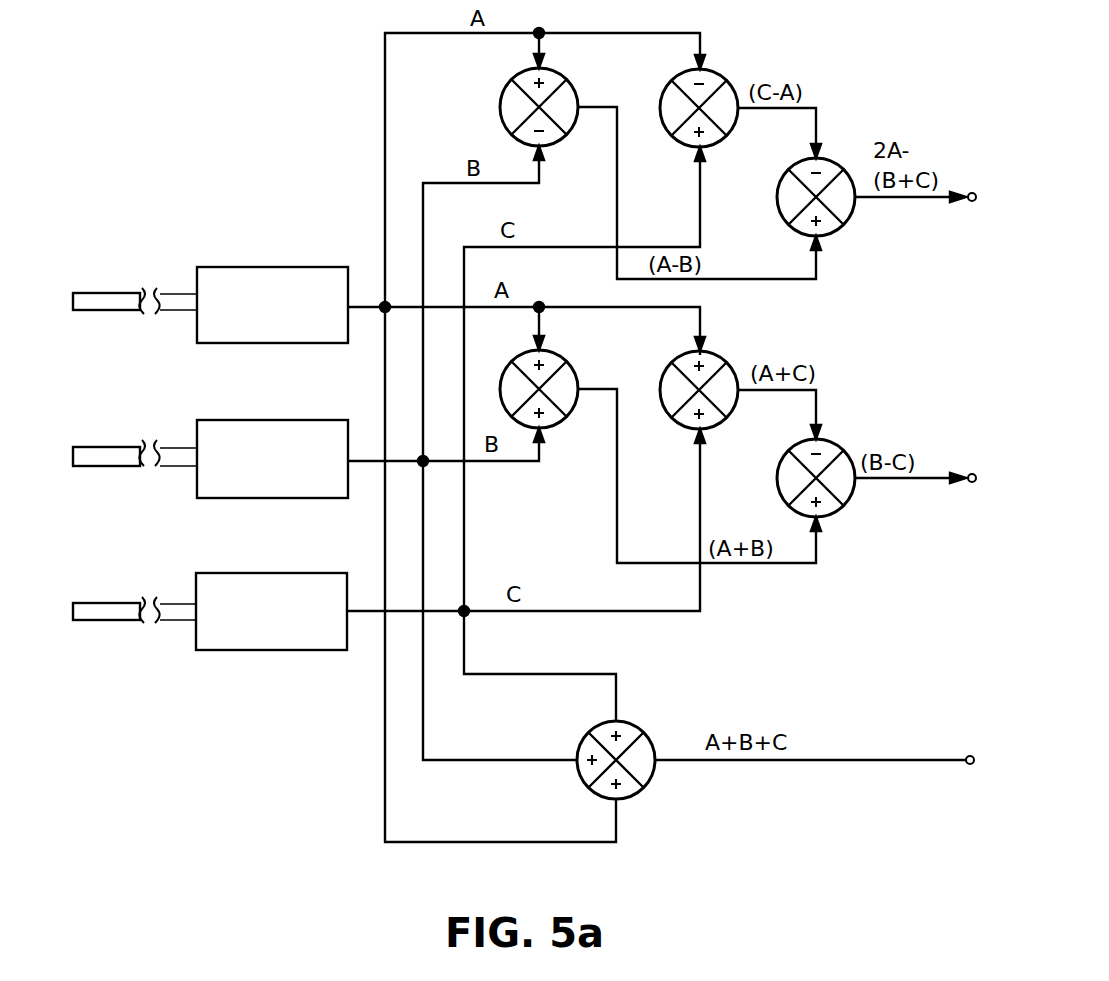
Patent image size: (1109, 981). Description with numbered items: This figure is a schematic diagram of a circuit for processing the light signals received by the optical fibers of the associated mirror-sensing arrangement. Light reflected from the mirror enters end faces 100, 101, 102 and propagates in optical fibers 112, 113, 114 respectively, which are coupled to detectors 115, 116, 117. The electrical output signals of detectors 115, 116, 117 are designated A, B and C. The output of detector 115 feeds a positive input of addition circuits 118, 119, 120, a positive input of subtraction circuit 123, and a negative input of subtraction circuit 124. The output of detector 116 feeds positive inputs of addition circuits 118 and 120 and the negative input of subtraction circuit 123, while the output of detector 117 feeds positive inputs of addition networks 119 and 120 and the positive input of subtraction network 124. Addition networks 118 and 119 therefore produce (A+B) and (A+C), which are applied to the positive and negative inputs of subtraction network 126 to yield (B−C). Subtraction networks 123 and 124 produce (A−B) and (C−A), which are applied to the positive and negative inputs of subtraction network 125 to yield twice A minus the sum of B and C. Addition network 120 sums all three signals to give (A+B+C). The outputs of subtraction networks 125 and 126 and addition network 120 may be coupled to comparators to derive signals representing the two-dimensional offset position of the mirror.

The end face 100 is at (128, 267).
The end face 101 is at (131, 425).
The end face 102 is at (131, 578).
The optical fiber 112 is at (115, 293).
The optical fiber 113 is at (122, 447).
The optical fiber 114 is at (114, 603).
The detector 115 is at (290, 267).
The detector 116 is at (290, 420).
The detector 117 is at (292, 573).
The addition circuit 118 is at (512, 368).
The addition circuit 119 is at (678, 366).
The addition circuit 120 is at (636, 730).
The subtraction circuit 123 is at (512, 80).
The subtraction circuit 124 is at (722, 82).
The subtraction network 125 is at (778, 203).
The subtraction network 126 is at (848, 506).